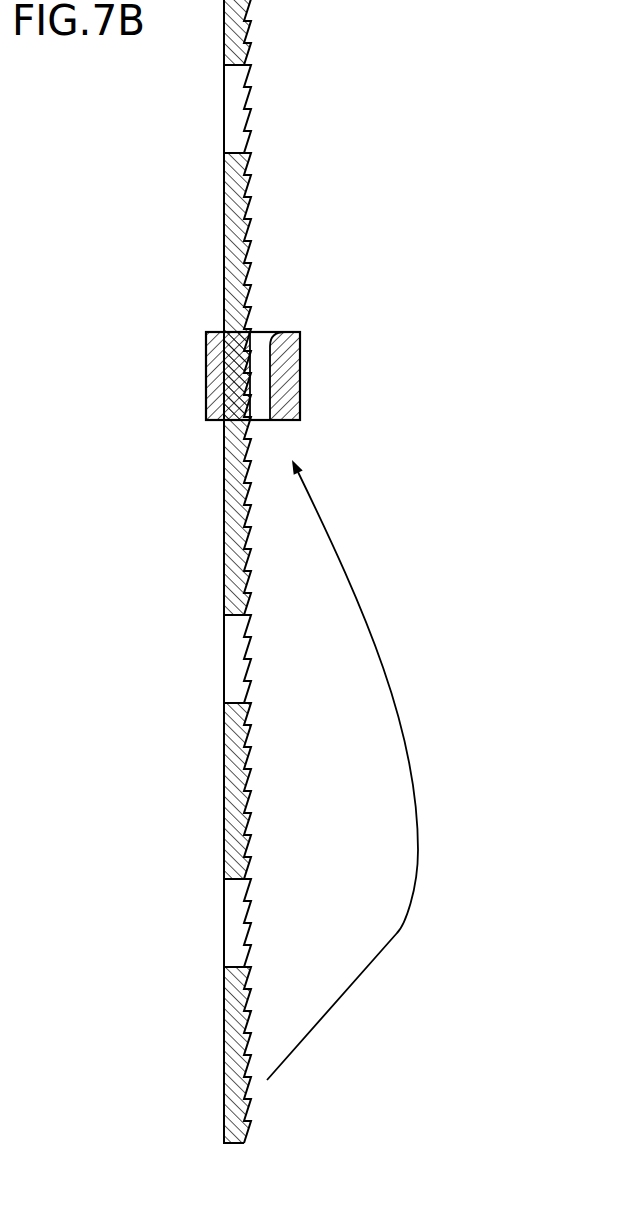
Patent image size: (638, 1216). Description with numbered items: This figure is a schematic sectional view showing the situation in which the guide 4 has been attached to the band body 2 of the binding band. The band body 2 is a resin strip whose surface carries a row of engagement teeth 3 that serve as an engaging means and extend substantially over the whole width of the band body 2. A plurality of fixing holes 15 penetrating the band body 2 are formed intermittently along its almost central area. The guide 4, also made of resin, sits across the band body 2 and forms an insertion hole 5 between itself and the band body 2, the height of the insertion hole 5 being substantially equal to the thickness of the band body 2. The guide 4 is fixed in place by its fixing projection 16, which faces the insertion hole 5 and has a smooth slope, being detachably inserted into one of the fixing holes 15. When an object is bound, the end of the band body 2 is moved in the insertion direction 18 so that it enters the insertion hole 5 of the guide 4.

The band body 2 is at (223, 801).
The engagement teeth 3 is at (240, 762).
The guide 4 is at (263, 372).
The insertion hole 5 is at (263, 332).
The fixing hole 15 is at (207, 656).
The fixing projection 16 is at (212, 352).
The insertion direction 18 is at (388, 677).